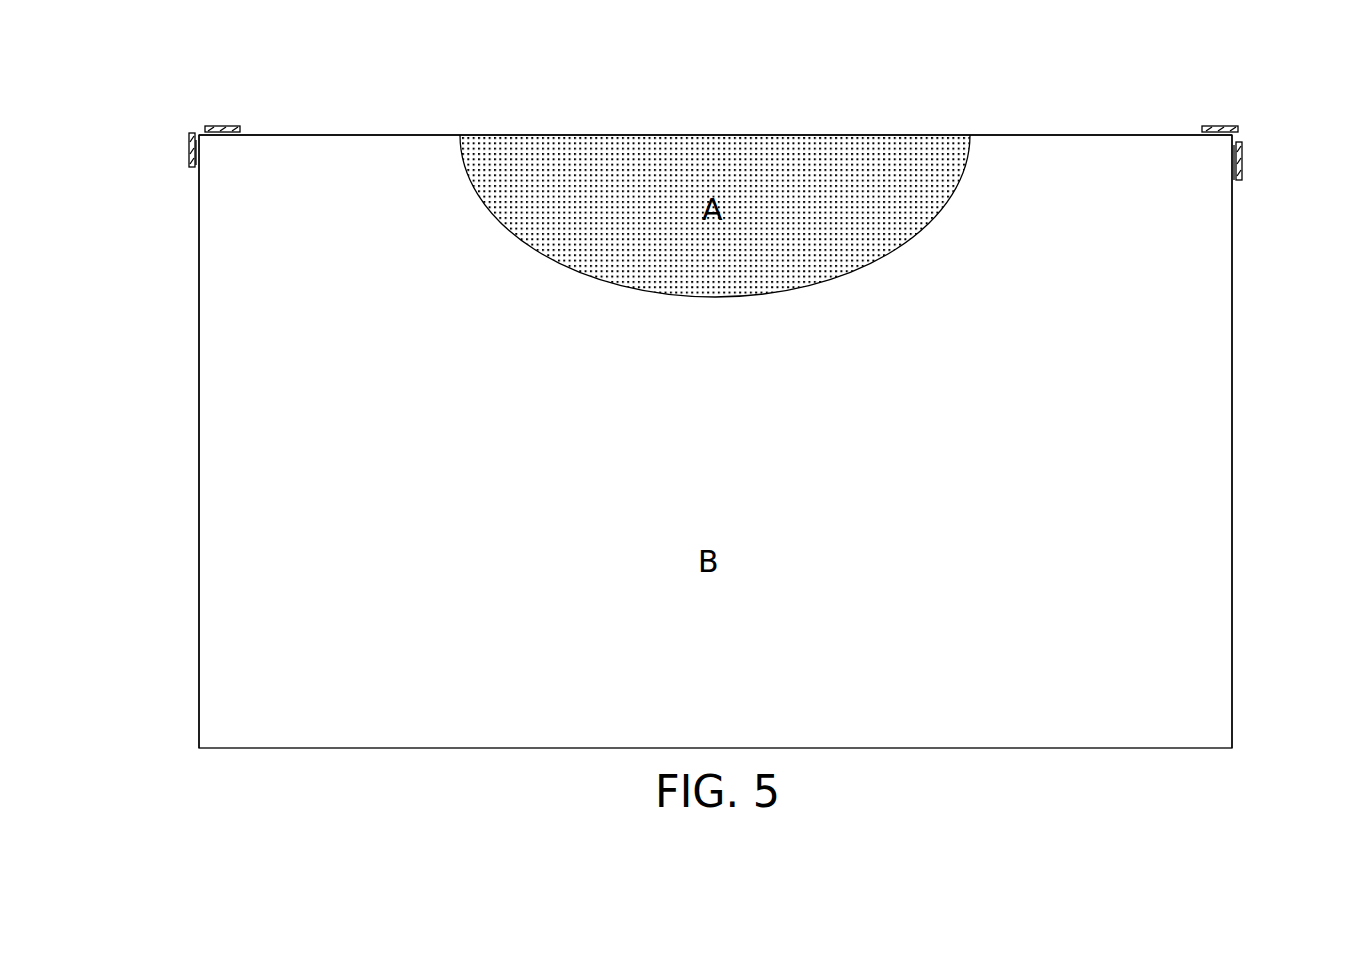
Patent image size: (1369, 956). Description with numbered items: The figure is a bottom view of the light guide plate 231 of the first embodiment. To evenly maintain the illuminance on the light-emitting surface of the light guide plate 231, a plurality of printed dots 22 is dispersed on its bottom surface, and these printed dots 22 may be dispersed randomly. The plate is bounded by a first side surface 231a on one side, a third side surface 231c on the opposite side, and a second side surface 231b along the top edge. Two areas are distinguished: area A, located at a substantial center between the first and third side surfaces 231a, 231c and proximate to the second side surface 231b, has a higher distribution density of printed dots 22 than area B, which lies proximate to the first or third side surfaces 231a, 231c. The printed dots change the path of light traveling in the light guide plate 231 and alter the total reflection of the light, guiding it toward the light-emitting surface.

The light guide plate 231 is at (199, 345).
The first side surface 231a is at (199, 513).
The second side surface 231b is at (725, 135).
The third side surface 231c is at (1233, 513).
The printed dots 22 is at (843, 165).